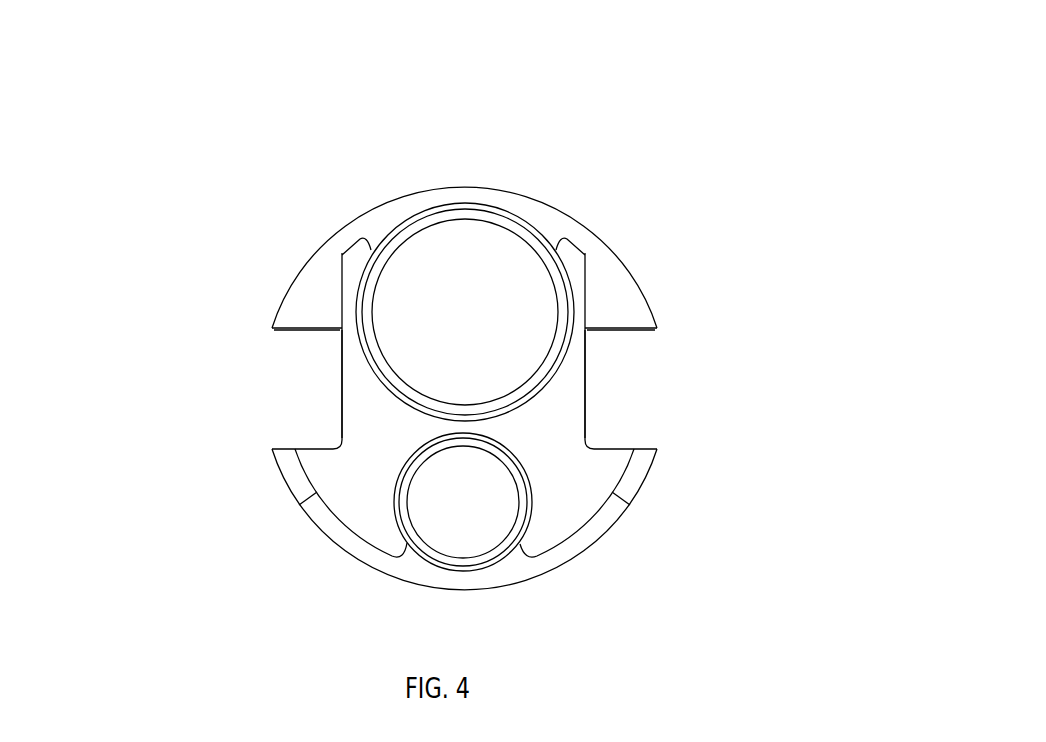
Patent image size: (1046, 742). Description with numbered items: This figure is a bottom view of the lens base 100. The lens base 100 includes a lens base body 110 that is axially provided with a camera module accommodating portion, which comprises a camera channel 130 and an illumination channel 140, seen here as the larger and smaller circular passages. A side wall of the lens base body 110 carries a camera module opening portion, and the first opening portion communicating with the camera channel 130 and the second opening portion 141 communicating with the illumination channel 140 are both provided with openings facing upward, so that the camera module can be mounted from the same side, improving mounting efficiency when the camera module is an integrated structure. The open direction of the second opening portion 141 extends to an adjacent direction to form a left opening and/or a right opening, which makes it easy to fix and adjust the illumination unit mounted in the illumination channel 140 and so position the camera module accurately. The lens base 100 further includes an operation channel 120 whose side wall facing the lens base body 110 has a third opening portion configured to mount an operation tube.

The lens base 100 is at (248, 128).
The lens base body 110 is at (573, 265).
The operation channel 120 is at (462, 505).
The camera channel 130 is at (463, 312).
The illumination channel 140 is at (340, 425).
The second opening portion 141 is at (273, 368).